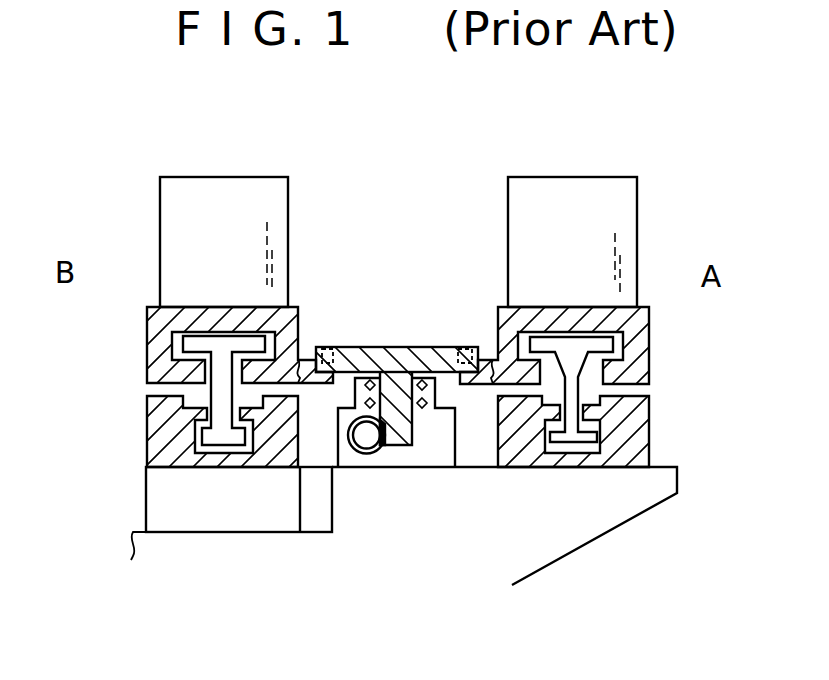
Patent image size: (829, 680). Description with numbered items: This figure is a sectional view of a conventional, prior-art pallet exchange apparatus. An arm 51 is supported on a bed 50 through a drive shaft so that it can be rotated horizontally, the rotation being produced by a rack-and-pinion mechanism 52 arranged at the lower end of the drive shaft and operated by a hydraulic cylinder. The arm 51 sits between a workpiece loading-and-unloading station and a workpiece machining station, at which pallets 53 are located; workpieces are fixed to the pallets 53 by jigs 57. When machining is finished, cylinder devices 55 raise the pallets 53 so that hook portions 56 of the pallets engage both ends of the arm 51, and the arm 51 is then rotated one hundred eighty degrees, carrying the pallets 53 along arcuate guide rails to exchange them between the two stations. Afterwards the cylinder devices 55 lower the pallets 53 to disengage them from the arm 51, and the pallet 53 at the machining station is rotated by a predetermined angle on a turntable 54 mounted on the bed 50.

The bed 50 is at (603, 512).
The arm 51 is at (406, 352).
The rack-and-pinion mechanism 52 is at (380, 456).
The pallet 53 is at (157, 364).
The turntable 54 is at (178, 525).
The cylinder device 55 is at (223, 397).
The hook portion 56 is at (324, 349).
The jig 57 is at (242, 192).